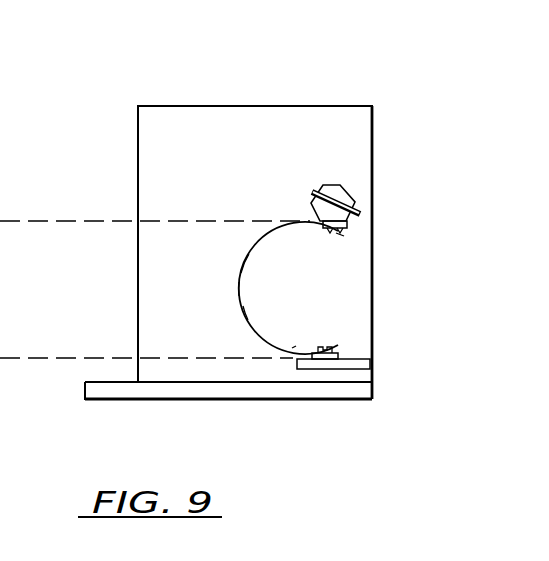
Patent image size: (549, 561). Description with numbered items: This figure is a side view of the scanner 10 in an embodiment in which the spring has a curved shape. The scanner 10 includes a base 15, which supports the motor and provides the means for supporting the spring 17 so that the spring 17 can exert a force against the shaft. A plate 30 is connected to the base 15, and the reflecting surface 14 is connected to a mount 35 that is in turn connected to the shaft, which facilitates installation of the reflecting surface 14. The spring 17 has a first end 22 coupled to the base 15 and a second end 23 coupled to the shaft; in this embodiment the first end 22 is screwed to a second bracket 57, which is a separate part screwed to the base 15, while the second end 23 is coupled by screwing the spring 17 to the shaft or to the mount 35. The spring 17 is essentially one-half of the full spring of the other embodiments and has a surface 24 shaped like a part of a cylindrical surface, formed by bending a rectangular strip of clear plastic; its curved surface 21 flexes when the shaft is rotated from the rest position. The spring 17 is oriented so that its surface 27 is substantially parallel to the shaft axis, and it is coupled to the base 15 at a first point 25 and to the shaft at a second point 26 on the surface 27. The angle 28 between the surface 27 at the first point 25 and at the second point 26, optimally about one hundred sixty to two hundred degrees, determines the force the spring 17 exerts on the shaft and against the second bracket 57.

The scanner 10 is at (115, 112).
The reflecting surface 14 is at (337, 194).
The base 15 is at (84, 386).
The spring 17 is at (239, 293).
The curved surface 21 is at (241, 273).
The first end 22 is at (347, 229).
The second end 23 is at (292, 348).
The surface 24 is at (268, 234).
The first point 25 is at (295, 347).
The second point 26 is at (343, 233).
The surface 27 is at (243, 312).
The angle 28 is at (0, 157).
The plate 30 is at (228, 118).
The mount 35 is at (350, 193).
The second bracket 57 is at (370, 368).